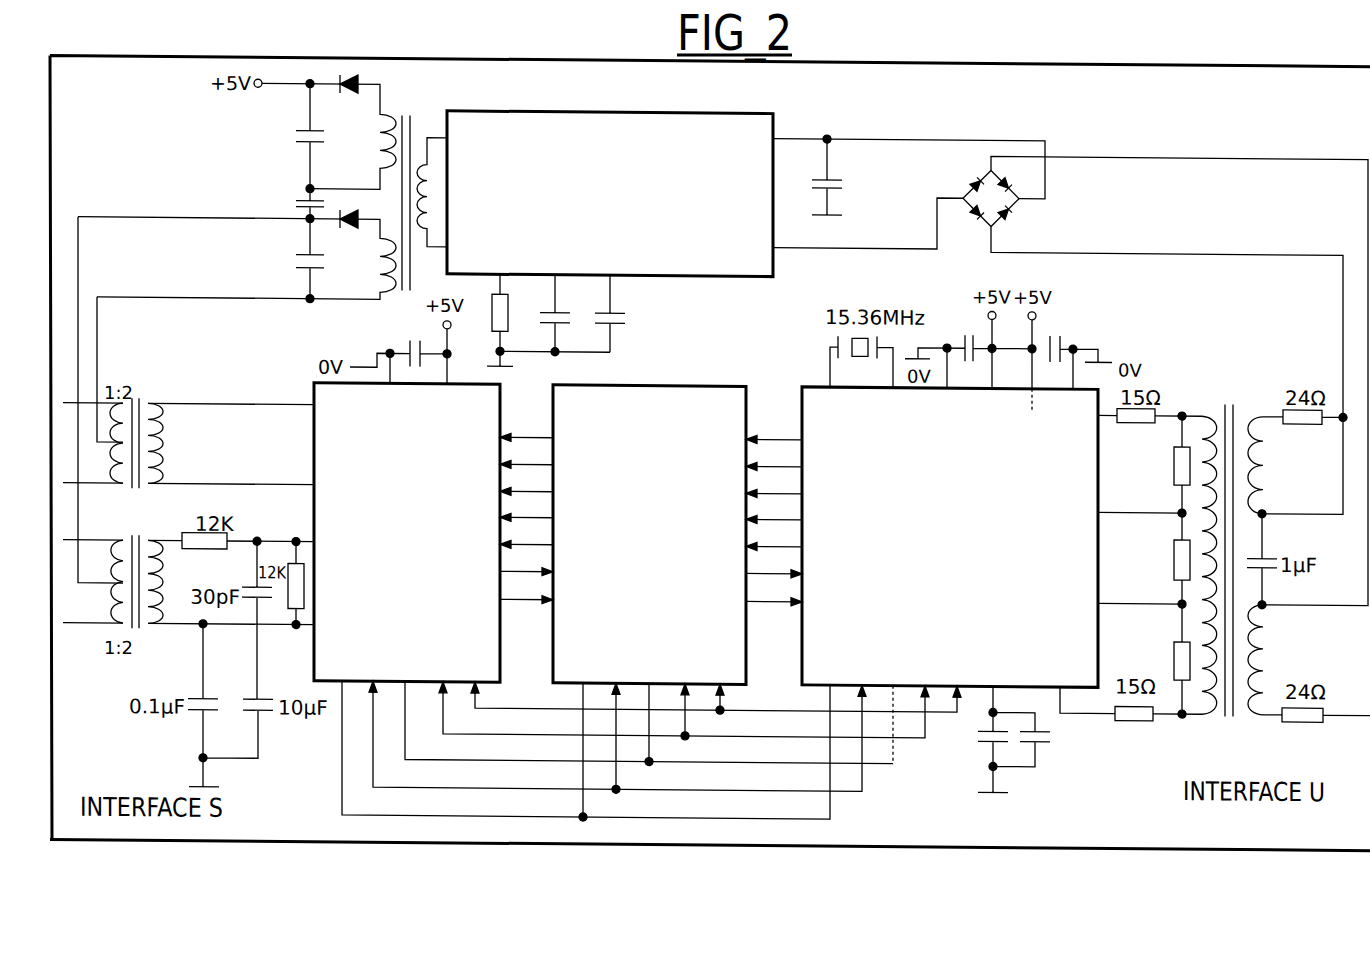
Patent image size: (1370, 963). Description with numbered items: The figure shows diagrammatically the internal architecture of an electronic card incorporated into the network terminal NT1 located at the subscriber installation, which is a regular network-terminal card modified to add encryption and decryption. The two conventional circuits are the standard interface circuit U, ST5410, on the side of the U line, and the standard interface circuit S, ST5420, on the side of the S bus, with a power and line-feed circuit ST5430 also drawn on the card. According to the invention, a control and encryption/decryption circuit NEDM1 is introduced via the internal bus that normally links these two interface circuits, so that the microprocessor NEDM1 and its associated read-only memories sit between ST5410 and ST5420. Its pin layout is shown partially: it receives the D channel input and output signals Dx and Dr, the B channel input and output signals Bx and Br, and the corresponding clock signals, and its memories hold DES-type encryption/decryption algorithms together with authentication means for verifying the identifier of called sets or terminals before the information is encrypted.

The network terminal NT1 is at (1171, 860).
The control and encryption/decryption circuit NEDM1 is at (654, 382).
The power supply controller circuit ST5430 is at (610, 194).
The standard interface circuit S ST5420 is at (407, 533).
The standard interface circuit U ST5410 is at (954, 537).